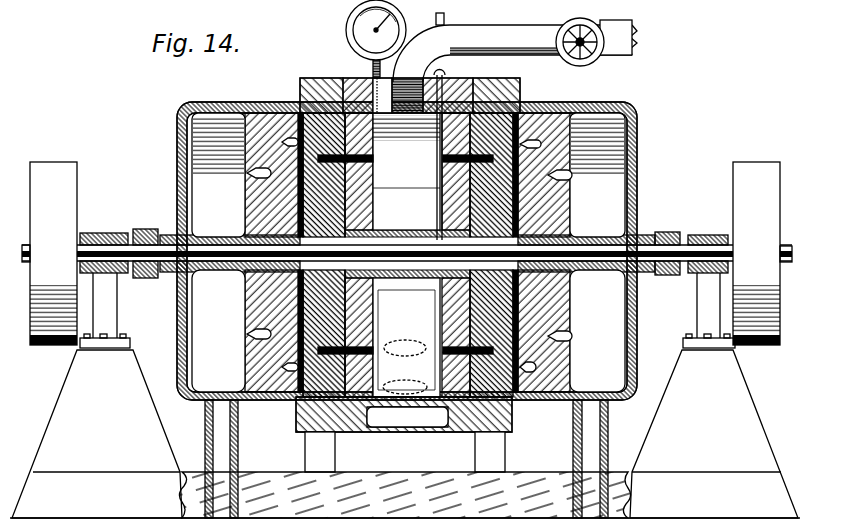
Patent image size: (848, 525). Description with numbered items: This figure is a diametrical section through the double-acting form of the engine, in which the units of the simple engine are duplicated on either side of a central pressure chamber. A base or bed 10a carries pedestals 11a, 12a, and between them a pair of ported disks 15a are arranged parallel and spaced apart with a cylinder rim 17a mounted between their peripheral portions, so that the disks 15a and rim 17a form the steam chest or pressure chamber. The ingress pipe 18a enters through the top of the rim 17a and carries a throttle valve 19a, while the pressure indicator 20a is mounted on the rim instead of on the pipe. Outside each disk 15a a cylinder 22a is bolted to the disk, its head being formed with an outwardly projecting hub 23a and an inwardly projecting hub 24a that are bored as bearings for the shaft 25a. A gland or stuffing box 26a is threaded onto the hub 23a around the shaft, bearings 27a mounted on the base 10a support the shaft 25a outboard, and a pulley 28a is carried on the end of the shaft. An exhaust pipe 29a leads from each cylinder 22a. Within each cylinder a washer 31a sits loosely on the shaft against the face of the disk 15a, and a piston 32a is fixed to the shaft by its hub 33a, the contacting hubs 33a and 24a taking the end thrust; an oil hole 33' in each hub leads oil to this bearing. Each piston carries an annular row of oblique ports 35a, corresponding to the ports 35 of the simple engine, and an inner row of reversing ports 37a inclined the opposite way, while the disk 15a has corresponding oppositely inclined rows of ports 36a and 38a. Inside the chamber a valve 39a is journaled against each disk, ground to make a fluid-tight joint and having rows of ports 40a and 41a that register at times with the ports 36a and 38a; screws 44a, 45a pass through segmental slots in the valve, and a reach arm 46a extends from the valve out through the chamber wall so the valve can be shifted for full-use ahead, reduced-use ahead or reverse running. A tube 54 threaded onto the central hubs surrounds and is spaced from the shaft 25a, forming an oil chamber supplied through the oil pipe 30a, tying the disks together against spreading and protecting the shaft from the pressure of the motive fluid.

The base or bed 10a is at (405, 434).
The pedestal 11a is at (320, 452).
The pedestal 12a is at (490, 452).
The ported disk 15a is at (316, 90).
The cylinder rim 17a is at (446, 80).
The ingress pipe 18a is at (500, 38).
The throttle valve 19a is at (585, 35).
The pressure indicator 20a is at (355, 39).
The cylinder 22a is at (238, 94).
The outer hub 23a is at (160, 236).
The inner hub 24a is at (200, 268).
The shaft 25a is at (722, 254).
The gland or stuffing box 26a is at (148, 279).
The bearing 27a is at (110, 228).
The pulley 28a is at (407, 253).
The exhaust pipe 29a is at (228, 458).
The oil pipe 30a is at (433, 15).
The washer 31a is at (296, 300).
The piston 32a is at (246, 380).
The piston hub 33a is at (407, 234).
The oil hole 33' is at (407, 287).
The ports 35 is at (272, 106).
The ports 35a is at (534, 366).
The disk ports 36a is at (258, 183).
The reversing ports 37a is at (250, 172).
The disk ports 38a is at (364, 190).
The valve 39a is at (456, 211).
The valve ports 40a is at (405, 386).
The valve ports 41a is at (405, 348).
The screw 44a is at (360, 165).
The screw 45a is at (455, 326).
The reach arm 46a is at (380, 136).
The tube 54 is at (410, 312).